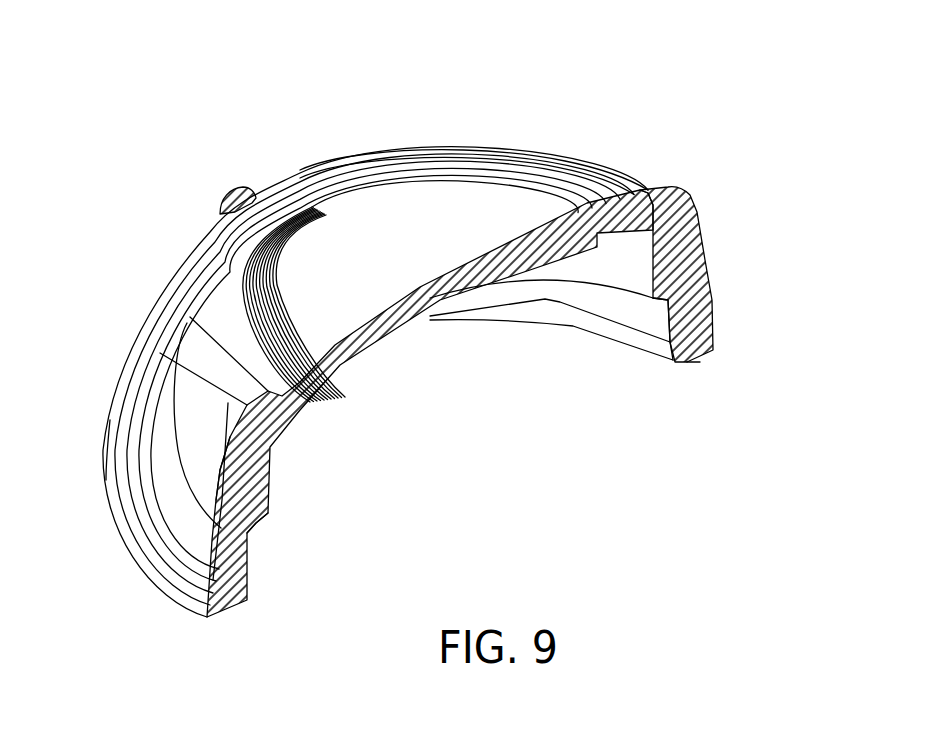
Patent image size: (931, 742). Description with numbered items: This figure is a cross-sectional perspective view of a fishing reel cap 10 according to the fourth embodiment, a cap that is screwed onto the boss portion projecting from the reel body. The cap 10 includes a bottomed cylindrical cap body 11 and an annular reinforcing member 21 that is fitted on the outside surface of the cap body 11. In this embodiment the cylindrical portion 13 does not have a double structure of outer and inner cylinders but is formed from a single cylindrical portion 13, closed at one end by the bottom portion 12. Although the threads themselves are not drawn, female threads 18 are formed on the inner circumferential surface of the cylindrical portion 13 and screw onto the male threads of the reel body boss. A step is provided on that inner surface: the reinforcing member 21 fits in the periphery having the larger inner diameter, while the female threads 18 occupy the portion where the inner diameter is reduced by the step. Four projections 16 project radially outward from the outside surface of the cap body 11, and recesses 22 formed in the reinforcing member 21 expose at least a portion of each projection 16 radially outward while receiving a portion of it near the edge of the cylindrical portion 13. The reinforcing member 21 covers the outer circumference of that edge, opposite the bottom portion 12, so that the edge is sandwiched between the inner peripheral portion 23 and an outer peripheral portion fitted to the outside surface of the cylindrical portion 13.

The cap 10 is at (481, 105).
The cap body 11 is at (567, 157).
The bottom portion 12 is at (391, 202).
The cylindrical portion 13 is at (693, 266).
The projection 16 is at (247, 187).
The female threads 18 is at (585, 266).
The annular reinforcing member 21 is at (130, 425).
The recess 22 is at (207, 583).
The inner peripheral portion 23 is at (630, 307).